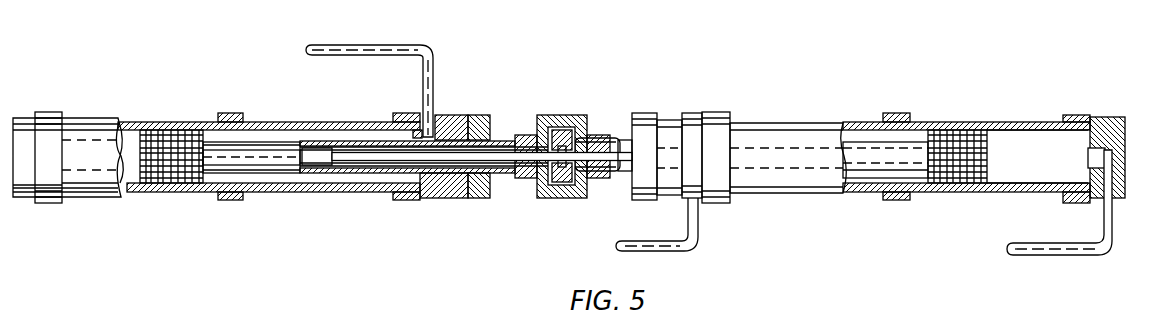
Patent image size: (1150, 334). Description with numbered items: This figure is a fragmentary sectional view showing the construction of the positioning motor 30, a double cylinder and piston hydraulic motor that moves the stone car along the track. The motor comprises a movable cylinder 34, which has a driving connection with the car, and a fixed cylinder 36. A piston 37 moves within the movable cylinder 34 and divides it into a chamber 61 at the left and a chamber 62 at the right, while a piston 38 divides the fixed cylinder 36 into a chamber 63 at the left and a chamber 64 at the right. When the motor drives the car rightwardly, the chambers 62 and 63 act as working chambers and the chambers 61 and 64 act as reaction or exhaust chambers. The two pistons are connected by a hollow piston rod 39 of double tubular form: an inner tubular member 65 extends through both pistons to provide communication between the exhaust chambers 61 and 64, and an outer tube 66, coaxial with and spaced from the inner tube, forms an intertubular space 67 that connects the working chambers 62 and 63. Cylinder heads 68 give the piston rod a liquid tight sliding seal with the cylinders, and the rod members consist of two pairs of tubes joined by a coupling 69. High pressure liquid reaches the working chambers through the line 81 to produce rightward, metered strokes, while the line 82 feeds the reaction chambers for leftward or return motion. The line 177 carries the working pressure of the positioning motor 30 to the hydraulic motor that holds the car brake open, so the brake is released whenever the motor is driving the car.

The positioning motor 30 is at (733, 112).
The movable cylinder 34 is at (75, 118).
The fixed cylinder 36 is at (828, 123).
The piston 37 is at (170, 143).
The piston 38 is at (967, 185).
The piston rod 39 is at (507, 140).
The chamber 61 is at (130, 140).
The chamber 62 is at (266, 135).
The chamber 63 is at (907, 138).
The chamber 64 is at (1038, 143).
The inner tubular member 65 is at (338, 158).
The outer tube 66 is at (263, 167).
The intertubular space 67 is at (507, 146).
The cylinder heads 68 is at (457, 116).
The coupling 69 is at (550, 199).
The line 81 is at (678, 250).
The line 82 is at (1034, 257).
The line 177 is at (394, 46).